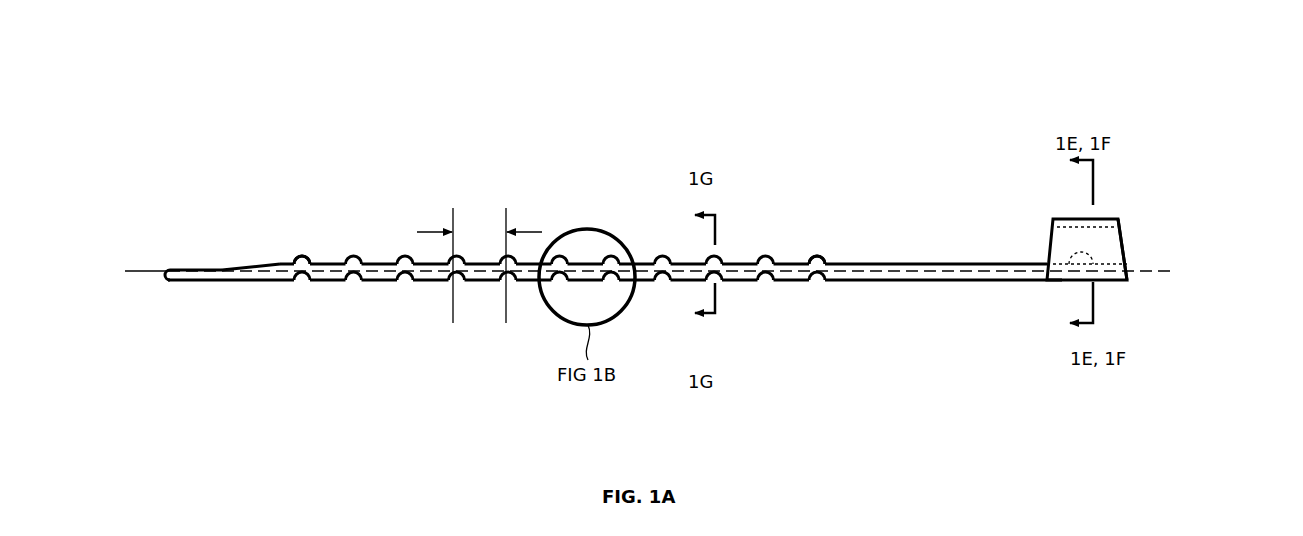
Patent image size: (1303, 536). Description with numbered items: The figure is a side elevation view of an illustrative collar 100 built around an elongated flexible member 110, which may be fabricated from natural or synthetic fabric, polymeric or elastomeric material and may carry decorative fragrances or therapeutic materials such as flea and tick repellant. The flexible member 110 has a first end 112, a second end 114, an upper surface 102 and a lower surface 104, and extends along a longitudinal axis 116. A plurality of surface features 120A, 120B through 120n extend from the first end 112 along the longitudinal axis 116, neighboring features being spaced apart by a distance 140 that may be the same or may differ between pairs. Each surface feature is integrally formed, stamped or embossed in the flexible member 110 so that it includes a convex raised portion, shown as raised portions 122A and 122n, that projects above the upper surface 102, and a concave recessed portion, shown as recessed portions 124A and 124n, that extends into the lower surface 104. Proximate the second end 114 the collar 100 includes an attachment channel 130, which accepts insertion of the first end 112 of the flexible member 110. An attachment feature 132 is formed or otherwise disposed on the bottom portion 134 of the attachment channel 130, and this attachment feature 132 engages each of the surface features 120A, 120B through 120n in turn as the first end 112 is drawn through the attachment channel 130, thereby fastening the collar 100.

The collar 100 is at (1204, 66).
The upper surface 102 is at (930, 266).
The lower surface 104 is at (930, 276).
The flexible member 110 is at (904, 280).
The first end 112 is at (183, 285).
The second end 114 is at (1120, 279).
The longitudinal axis 116 is at (143, 270).
The first surface feature 120A is at (294, 259).
The second surface feature 120B is at (359, 255).
The nth surface feature 120n is at (810, 257).
The raised portion 122A is at (308, 257).
The raised portion 122n is at (820, 257).
The recessed portion 124A is at (303, 284).
The recessed portion 124n is at (818, 284).
The attachment channel 130 is at (1105, 216).
The attachment feature 132 is at (1092, 250).
The bottom portion 134 is at (1062, 278).
The distance 140 is at (479, 265).